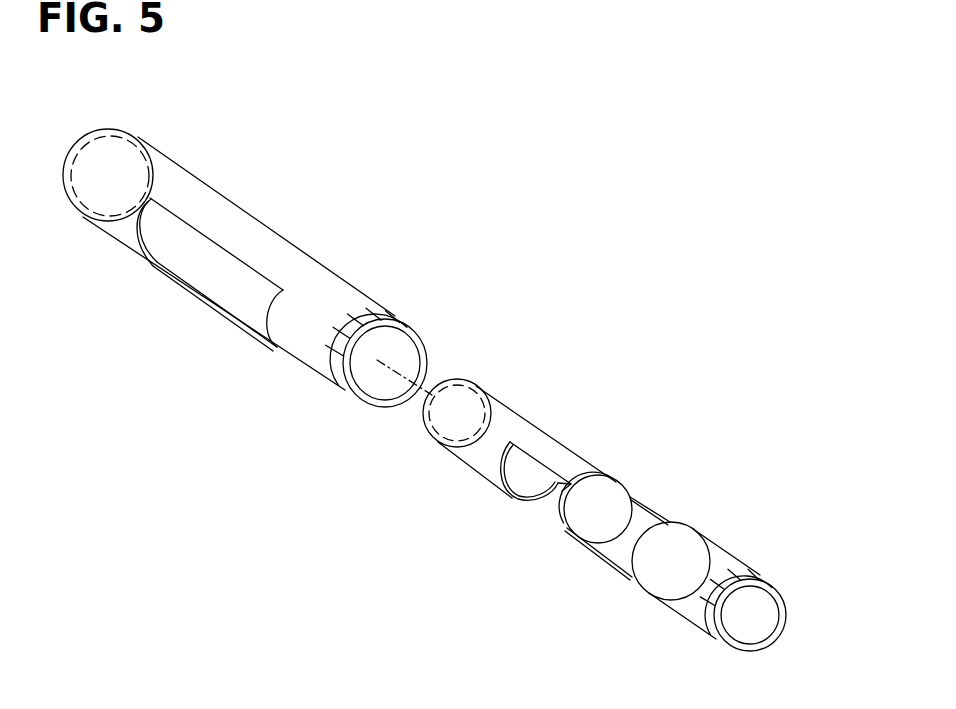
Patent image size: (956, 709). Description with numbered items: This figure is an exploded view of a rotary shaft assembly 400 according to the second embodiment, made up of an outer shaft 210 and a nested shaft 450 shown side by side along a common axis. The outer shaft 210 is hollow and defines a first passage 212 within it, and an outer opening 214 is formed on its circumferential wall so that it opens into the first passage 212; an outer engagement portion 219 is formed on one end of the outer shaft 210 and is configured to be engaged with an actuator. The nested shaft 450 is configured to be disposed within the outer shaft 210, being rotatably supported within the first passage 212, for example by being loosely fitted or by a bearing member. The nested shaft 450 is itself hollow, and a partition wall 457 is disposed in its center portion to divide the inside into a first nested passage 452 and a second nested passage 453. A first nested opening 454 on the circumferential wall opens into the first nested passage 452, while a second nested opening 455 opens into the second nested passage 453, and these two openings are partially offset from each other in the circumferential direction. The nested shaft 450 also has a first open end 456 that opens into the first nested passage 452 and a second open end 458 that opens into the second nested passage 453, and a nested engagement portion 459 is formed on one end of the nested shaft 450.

The outer shaft 210 is at (178, 164).
The first passage 212 is at (270, 240).
The outer opening 214 is at (183, 260).
The outer engagement portion 219 is at (380, 310).
The rotary shaft assembly 400 is at (425, 190).
The nested shaft 450 is at (573, 447).
The first nested passage 452 is at (518, 477).
The second nested passage 453 is at (698, 543).
The first nested opening 454 is at (543, 510).
The second nested opening 455 is at (642, 520).
The first open end 456 is at (457, 397).
The partition wall 457 is at (600, 497).
The second open end 458 is at (760, 598).
The nested engagement portion 459 is at (740, 573).